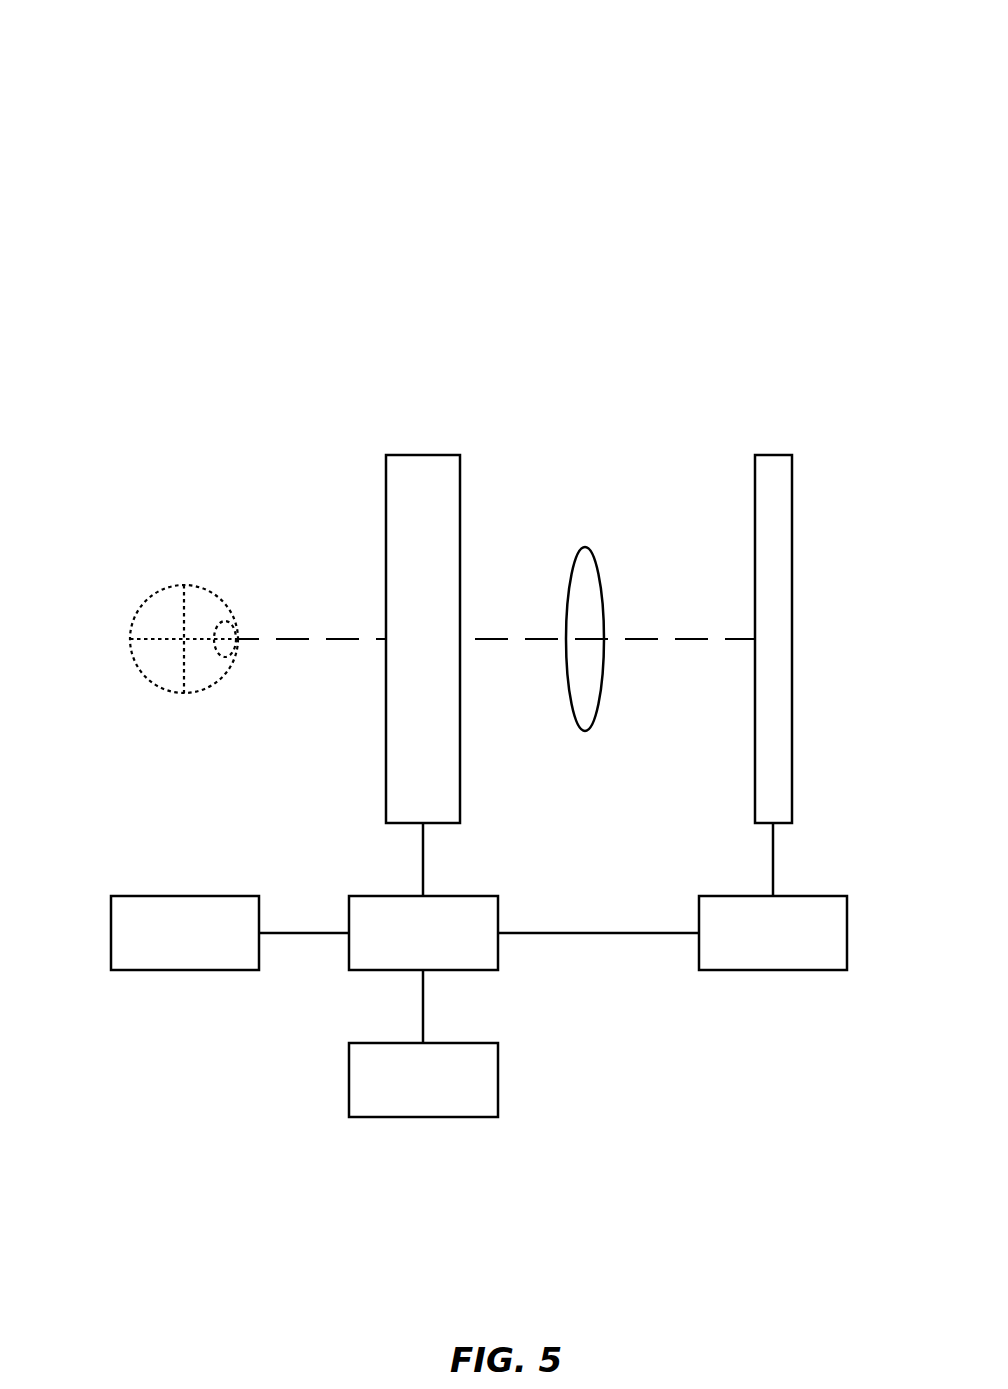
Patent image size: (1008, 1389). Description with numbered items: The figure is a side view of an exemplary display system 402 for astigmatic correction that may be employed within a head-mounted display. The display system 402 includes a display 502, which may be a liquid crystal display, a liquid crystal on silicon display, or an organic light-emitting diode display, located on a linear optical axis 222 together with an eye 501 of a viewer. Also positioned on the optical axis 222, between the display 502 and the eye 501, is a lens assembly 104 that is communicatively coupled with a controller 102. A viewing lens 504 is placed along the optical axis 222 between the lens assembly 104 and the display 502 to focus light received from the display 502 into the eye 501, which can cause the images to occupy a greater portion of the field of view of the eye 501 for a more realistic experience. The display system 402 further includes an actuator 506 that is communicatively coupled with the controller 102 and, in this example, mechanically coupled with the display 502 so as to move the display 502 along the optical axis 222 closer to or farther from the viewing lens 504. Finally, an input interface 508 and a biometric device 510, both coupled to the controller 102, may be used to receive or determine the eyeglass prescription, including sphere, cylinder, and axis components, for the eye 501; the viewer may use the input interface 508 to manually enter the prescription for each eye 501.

The display system 402 is at (125, 137).
The eye 501 is at (131, 620).
The lens assembly 104 is at (423, 639).
The viewing lens 504 is at (567, 603).
The optical axis 222 is at (700, 638).
The display 502 is at (793, 512).
The biometric device 510 is at (185, 933).
The controller 102 is at (423, 933).
The actuator 506 is at (773, 933).
The input interface 508 is at (423, 1080).